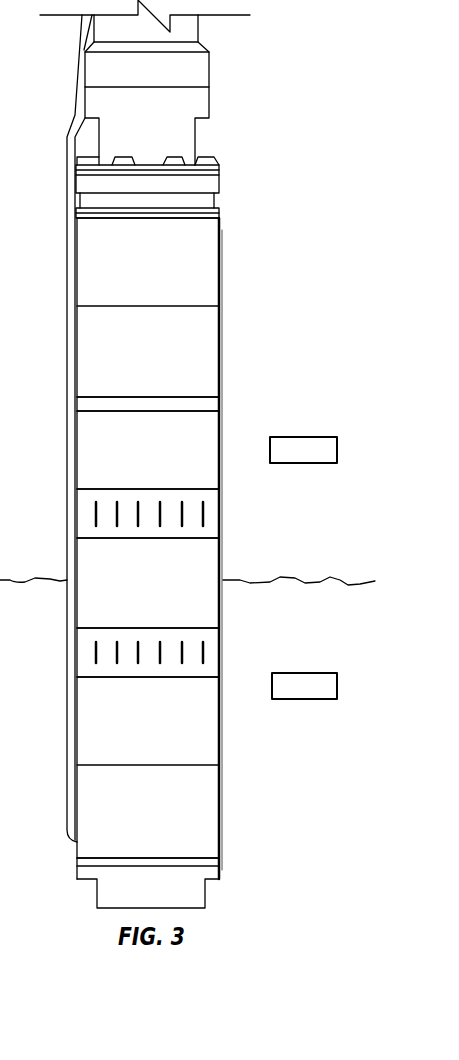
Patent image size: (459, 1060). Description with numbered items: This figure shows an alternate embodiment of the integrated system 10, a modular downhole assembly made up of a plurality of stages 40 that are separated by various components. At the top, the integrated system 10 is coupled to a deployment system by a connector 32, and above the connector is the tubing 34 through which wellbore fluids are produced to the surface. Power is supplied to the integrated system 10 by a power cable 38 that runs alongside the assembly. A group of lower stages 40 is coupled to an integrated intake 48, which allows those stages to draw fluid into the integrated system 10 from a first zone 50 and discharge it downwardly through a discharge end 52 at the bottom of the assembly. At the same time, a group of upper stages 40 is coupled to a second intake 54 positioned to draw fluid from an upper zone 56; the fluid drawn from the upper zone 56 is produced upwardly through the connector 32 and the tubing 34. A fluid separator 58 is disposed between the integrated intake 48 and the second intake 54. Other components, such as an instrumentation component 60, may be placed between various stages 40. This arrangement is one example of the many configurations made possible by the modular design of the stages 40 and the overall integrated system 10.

The integrated system 10 is at (288, 137).
The connector 32 is at (198, 108).
The tubing 34 is at (198, 25).
The power cable 38 is at (68, 165).
The stages 40 is at (58, 214).
The integrated intake 48 is at (209, 653).
The first zone 50 is at (305, 697).
The discharge end 52 is at (192, 886).
The second intake 54 is at (209, 515).
The upper zone 56 is at (302, 462).
The fluid separator 58 is at (200, 577).
The instrumentation component 60 is at (198, 405).